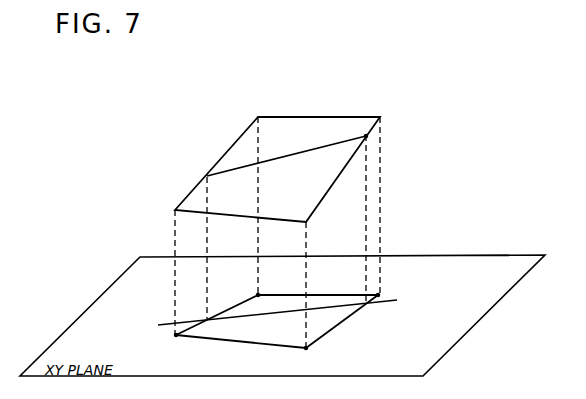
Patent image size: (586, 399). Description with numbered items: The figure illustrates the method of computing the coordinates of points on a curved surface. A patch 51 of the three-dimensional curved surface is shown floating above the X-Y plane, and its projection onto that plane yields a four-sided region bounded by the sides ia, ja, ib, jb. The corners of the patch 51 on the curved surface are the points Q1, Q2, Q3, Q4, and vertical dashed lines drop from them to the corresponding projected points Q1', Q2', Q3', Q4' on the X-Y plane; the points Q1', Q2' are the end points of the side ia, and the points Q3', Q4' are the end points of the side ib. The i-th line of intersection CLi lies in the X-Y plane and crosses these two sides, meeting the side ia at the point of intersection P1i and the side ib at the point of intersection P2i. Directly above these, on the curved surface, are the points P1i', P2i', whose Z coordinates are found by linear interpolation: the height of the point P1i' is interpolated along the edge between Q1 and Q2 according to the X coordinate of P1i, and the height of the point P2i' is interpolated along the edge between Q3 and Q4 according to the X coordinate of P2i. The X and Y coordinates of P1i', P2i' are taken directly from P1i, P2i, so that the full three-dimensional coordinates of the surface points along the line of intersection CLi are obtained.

The plane P(m,n) of the object surface 51 is at (360, 117).
The point on the three-dimensional curved surface Q1 is at (161, 268).
The point on the three-dimensional curved surface Q2 is at (255, 197).
The point on the three-dimensional curved surface Q3 is at (396, 200).
The point on the three-dimensional curved surface Q4 is at (321, 283).
The point on the curved surface P1i' is at (272, 157).
The point on the curved surface P2i' is at (389, 143).
The point of intersection P1i is at (222, 256).
The point of intersection P2i is at (378, 232).
The side ia is at (243, 300).
The side ja is at (317, 296).
The side ib is at (341, 323).
The side jb is at (234, 343).
The line of intersection CLi is at (292, 313).
The end point of side ia Q1' is at (164, 342).
The end point of side ia Q2' is at (273, 287).
The end point of side ib Q3' is at (393, 289).
The end point of side ib Q4' is at (318, 357).